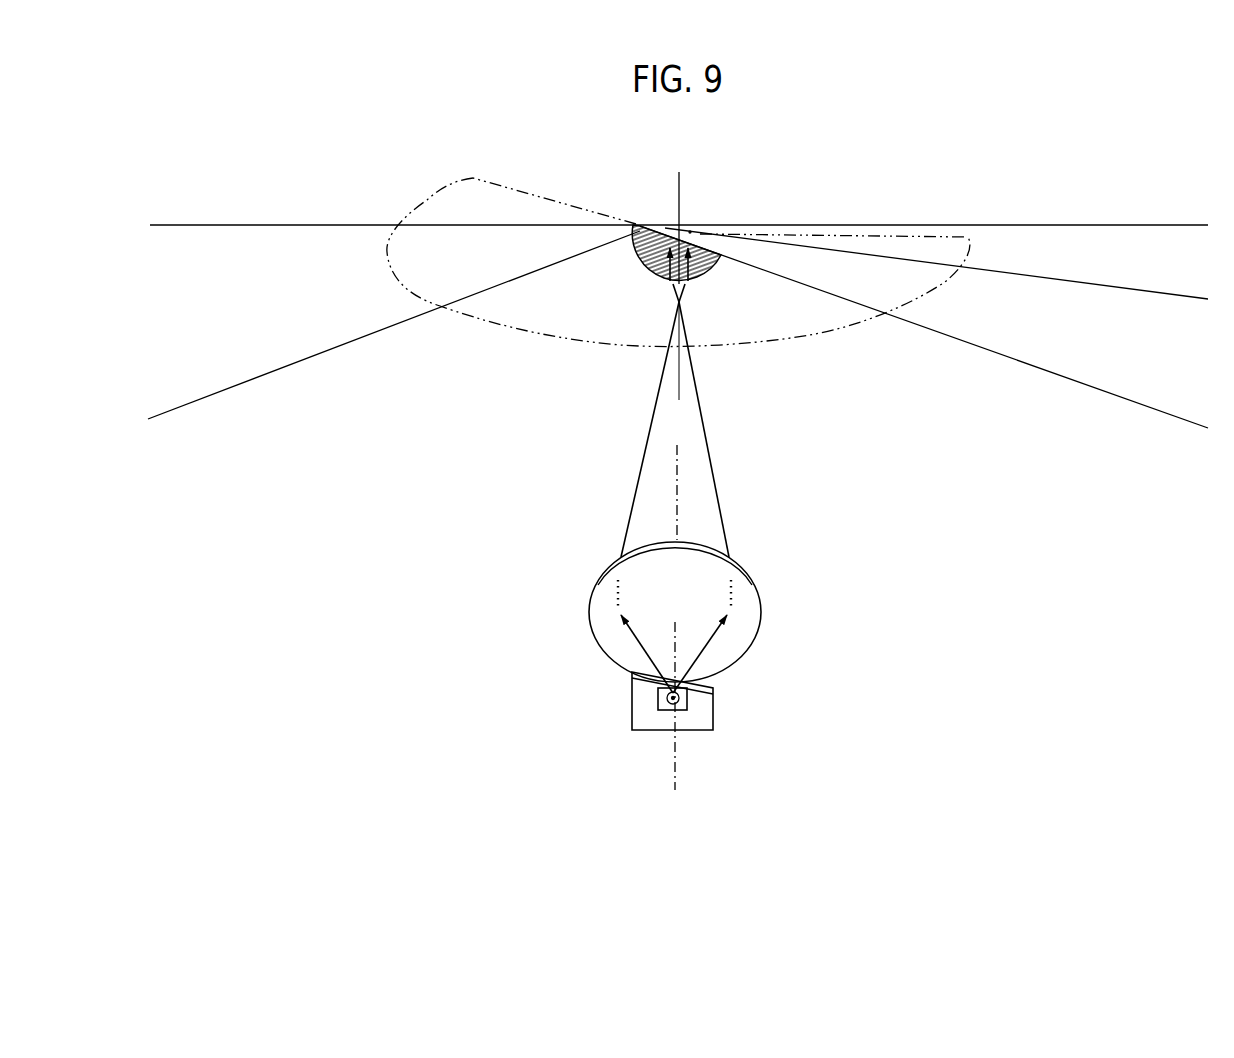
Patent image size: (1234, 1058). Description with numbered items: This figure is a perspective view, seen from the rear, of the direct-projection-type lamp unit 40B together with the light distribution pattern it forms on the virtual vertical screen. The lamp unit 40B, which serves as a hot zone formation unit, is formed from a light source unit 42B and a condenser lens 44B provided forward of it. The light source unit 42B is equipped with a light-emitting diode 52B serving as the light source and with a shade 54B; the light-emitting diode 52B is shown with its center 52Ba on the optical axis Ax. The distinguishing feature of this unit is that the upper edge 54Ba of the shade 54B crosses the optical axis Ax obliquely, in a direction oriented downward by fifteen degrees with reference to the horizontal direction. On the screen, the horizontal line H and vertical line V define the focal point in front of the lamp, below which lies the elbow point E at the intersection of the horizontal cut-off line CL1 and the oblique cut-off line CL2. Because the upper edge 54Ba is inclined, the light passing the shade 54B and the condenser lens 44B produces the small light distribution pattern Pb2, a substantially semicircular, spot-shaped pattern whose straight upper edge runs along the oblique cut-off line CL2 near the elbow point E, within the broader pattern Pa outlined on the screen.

The lamp unit 40B is at (872, 644).
The light source unit 42B is at (574, 683).
The condenser lens 44B is at (578, 579).
The light-emitting diode 52B is at (698, 702).
The light emitting center 52Ba is at (668, 703).
The shade 54B is at (628, 711).
The upper edge 54Ba is at (700, 684).
The light distribution pattern Pa is at (437, 190).
The small light distribution pattern Pb2 is at (713, 290).
The horizontal cut-off line CL1 is at (827, 237).
The oblique cut-off line CL2 is at (557, 186).
The elbow point E is at (690, 232).
The optical axis Ax is at (673, 488).
The point H–V (horizontal line) H is at (677, 228).
The point H–V (vertical line) V is at (679, 289).